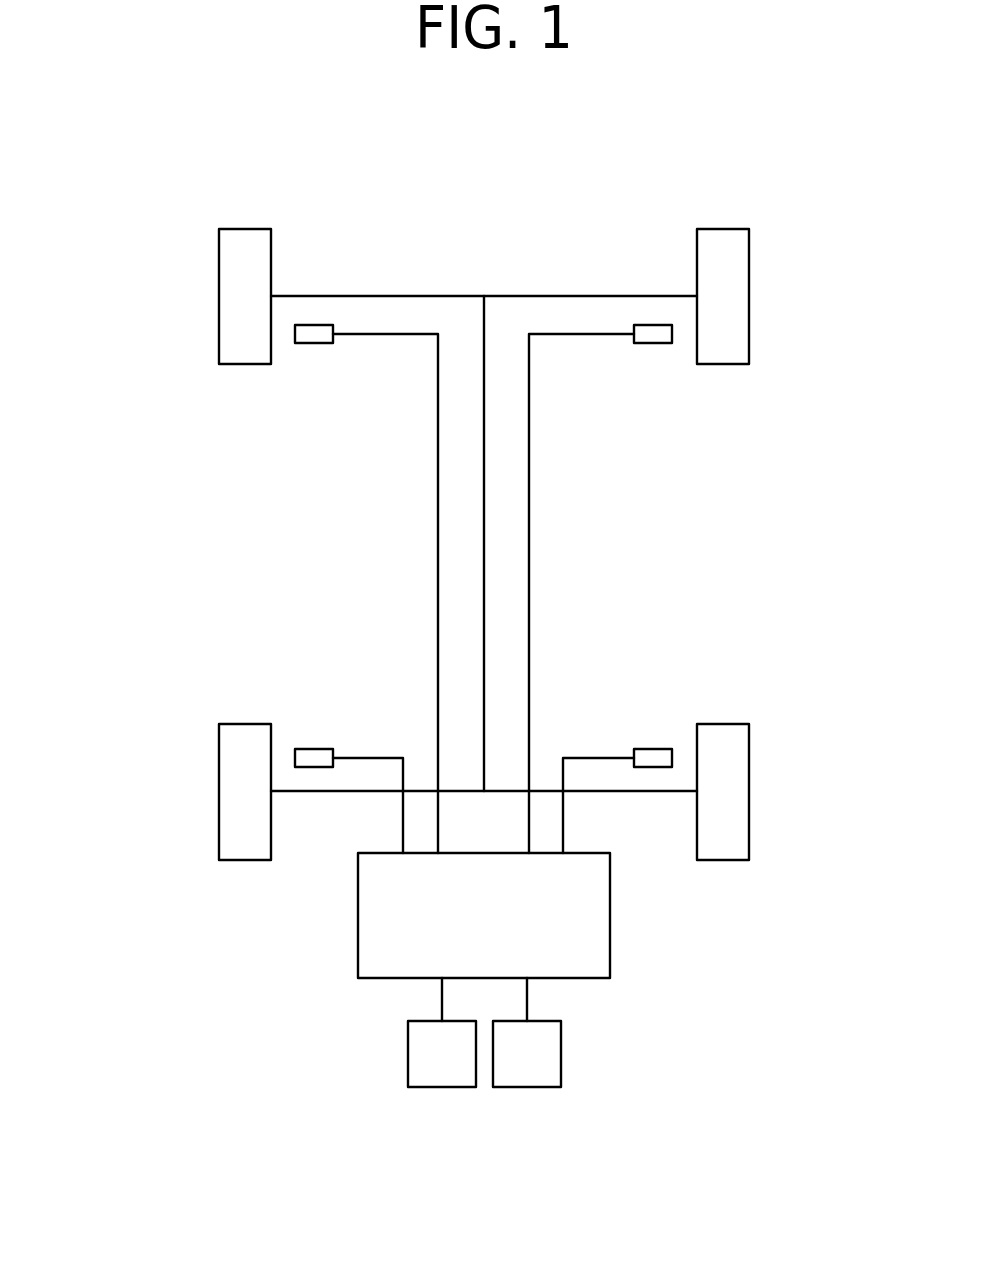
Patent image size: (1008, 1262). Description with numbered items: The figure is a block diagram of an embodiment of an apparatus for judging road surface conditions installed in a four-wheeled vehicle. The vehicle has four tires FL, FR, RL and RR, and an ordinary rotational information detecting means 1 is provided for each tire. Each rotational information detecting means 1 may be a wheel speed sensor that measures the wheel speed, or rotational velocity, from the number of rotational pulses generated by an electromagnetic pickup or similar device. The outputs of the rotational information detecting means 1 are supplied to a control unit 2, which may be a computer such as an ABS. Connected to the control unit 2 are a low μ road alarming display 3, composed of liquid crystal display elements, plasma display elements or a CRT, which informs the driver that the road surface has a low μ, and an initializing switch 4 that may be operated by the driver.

The rotational information detecting means 1 is at (307, 757).
The control unit 2 is at (596, 959).
The low μ road alarming display 3 is at (422, 1042).
The initializing switch 4 is at (549, 1047).
The front left tire FL is at (232, 268).
The front right tire FR is at (732, 273).
The rear left tire RL is at (233, 775).
The rear right tire RR is at (733, 779).